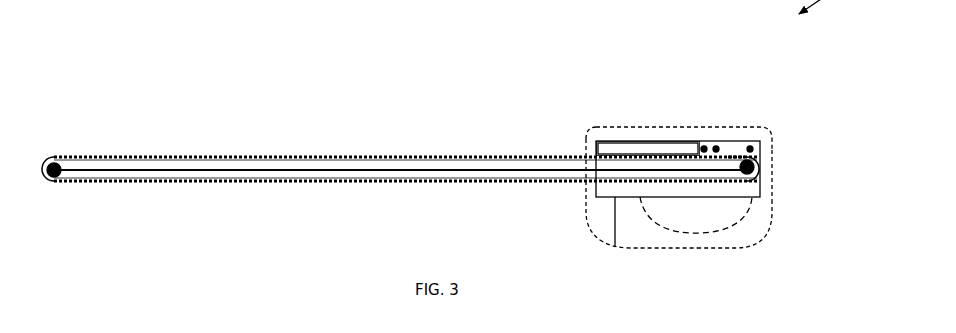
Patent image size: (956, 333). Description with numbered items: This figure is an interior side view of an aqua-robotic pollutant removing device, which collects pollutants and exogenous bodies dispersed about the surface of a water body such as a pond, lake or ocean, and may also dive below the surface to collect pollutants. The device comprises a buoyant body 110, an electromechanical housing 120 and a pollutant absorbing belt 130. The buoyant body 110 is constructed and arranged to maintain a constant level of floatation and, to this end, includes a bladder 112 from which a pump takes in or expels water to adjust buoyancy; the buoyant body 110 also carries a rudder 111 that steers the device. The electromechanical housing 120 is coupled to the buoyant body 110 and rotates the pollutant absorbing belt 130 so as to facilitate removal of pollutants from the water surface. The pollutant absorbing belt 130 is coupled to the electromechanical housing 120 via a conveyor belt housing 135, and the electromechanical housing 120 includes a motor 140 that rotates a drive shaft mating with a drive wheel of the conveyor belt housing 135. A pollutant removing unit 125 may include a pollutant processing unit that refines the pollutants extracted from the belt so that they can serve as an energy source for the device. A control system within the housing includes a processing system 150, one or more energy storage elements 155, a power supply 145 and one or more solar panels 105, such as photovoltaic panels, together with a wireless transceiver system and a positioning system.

The solar panel 105 is at (613, 128).
The buoyant body 110 is at (643, 232).
The rudder 111 is at (588, 207).
The bladder 112 is at (675, 232).
The electromechanical housing 120 is at (643, 192).
The pollutant removing unit 125 is at (668, 150).
The pollutant absorbing belt 130 is at (203, 155).
The conveyor belt housing 135 is at (423, 168).
The motor 140 is at (757, 148).
The power supply 145 is at (735, 153).
The processing system 150 is at (742, 168).
The energy storage element 155 is at (702, 146).